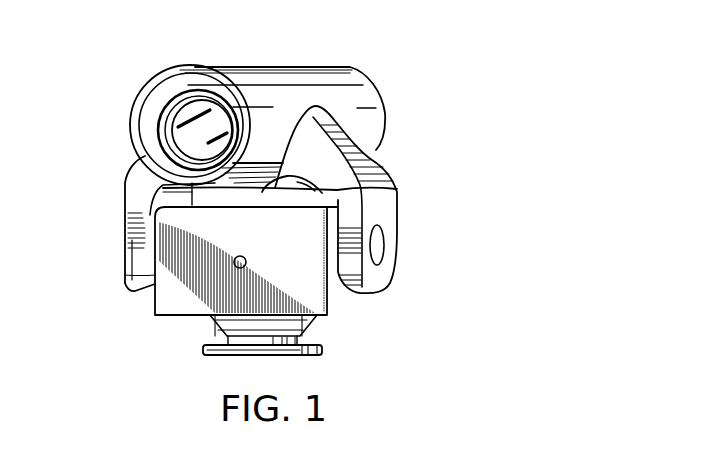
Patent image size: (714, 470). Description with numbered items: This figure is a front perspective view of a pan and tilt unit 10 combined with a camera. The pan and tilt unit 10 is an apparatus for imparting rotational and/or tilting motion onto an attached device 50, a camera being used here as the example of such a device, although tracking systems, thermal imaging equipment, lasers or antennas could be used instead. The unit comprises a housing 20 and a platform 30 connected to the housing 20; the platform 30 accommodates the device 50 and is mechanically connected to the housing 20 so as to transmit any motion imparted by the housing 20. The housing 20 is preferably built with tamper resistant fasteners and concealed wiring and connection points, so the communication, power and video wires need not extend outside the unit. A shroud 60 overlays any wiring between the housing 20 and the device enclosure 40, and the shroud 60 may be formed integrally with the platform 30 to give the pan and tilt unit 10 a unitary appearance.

The pan and tilt unit 10 is at (497, 98).
The housing 20 is at (357, 305).
The platform 30 is at (397, 189).
The device enclosure 40 is at (293, 80).
The device 50 is at (175, 97).
The shroud 60 is at (383, 160).